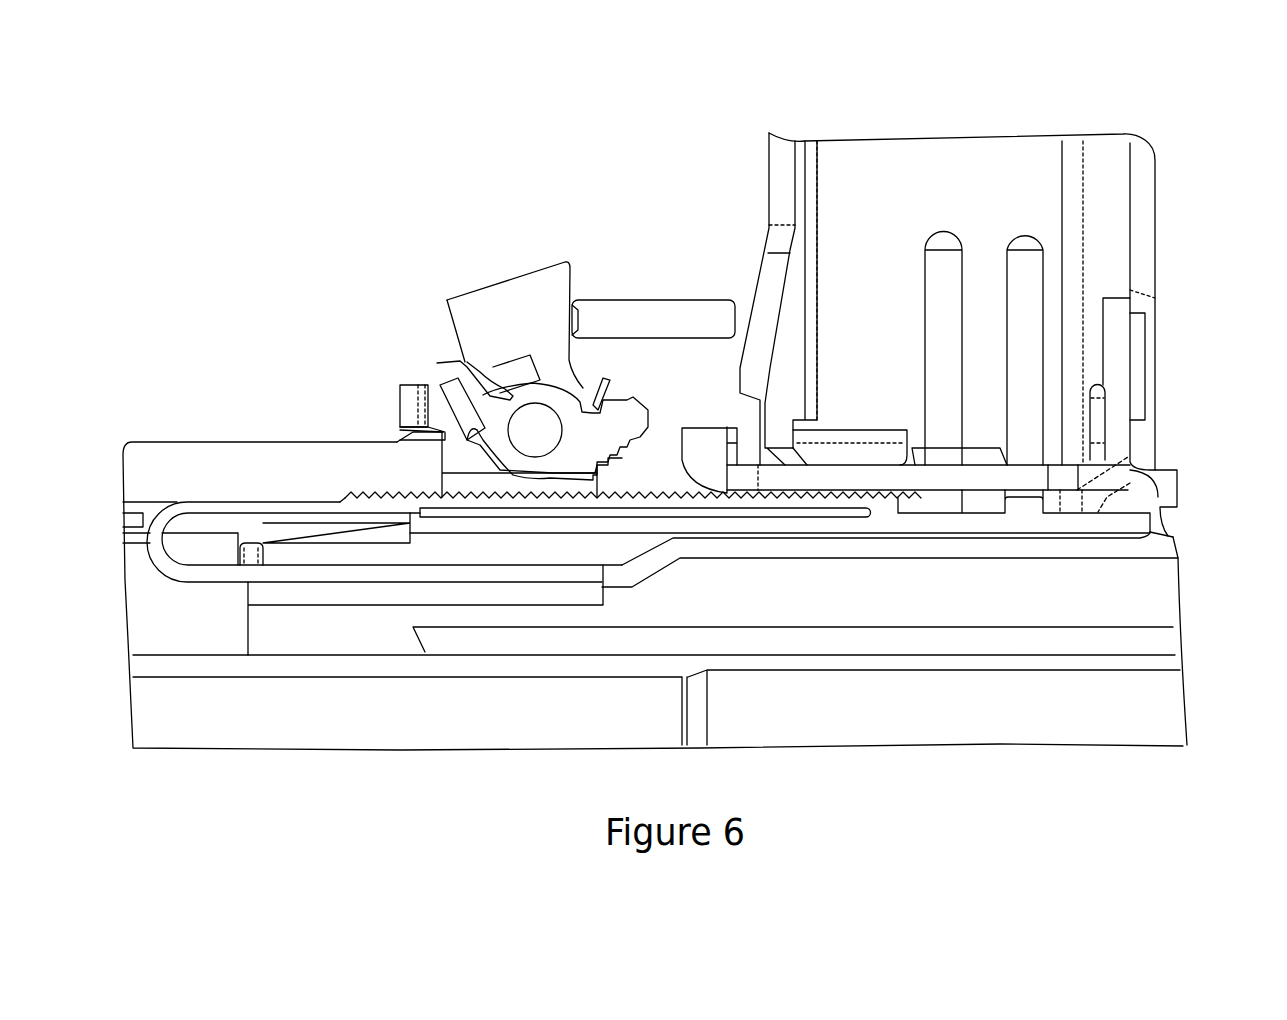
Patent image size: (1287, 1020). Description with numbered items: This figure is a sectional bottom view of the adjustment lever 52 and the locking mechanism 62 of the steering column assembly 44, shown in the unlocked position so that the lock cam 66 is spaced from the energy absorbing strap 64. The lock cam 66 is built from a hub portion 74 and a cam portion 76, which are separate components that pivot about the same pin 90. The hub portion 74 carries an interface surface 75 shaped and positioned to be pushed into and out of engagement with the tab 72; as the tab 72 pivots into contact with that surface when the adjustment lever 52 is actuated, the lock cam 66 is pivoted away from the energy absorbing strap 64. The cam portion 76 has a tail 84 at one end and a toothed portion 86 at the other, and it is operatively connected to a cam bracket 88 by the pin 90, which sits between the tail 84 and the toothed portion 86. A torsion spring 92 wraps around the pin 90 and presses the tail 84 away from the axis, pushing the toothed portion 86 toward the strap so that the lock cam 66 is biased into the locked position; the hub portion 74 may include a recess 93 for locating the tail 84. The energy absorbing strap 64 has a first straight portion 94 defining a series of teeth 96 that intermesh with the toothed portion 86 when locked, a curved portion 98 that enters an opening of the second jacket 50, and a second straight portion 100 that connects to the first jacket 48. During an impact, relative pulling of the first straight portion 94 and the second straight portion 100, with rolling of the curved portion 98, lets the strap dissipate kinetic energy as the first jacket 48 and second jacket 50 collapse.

The steering column assembly 44 is at (1215, 140).
The first jacket 48 is at (1190, 551).
The second jacket 50 is at (300, 513).
The adjustment lever 52 is at (1172, 285).
The locking mechanism 62 is at (480, 241).
The energy absorbing strap 64 is at (925, 507).
The lock cam 66 is at (440, 283).
The tab 72 is at (660, 303).
The hub portion 74 is at (521, 300).
The interface surface 75 is at (588, 312).
The cam portion 76 is at (453, 362).
The tail 84 is at (450, 381).
The toothed portion 86 is at (630, 418).
The cam bracket 88 is at (400, 393).
The pin 90 is at (547, 422).
The torsion spring 92 is at (597, 403).
The recess 93 is at (435, 428).
The first straight portion 94 is at (217, 507).
The teeth 96 is at (720, 490).
The curved portion 98 is at (152, 563).
The second straight portion 100 is at (215, 582).